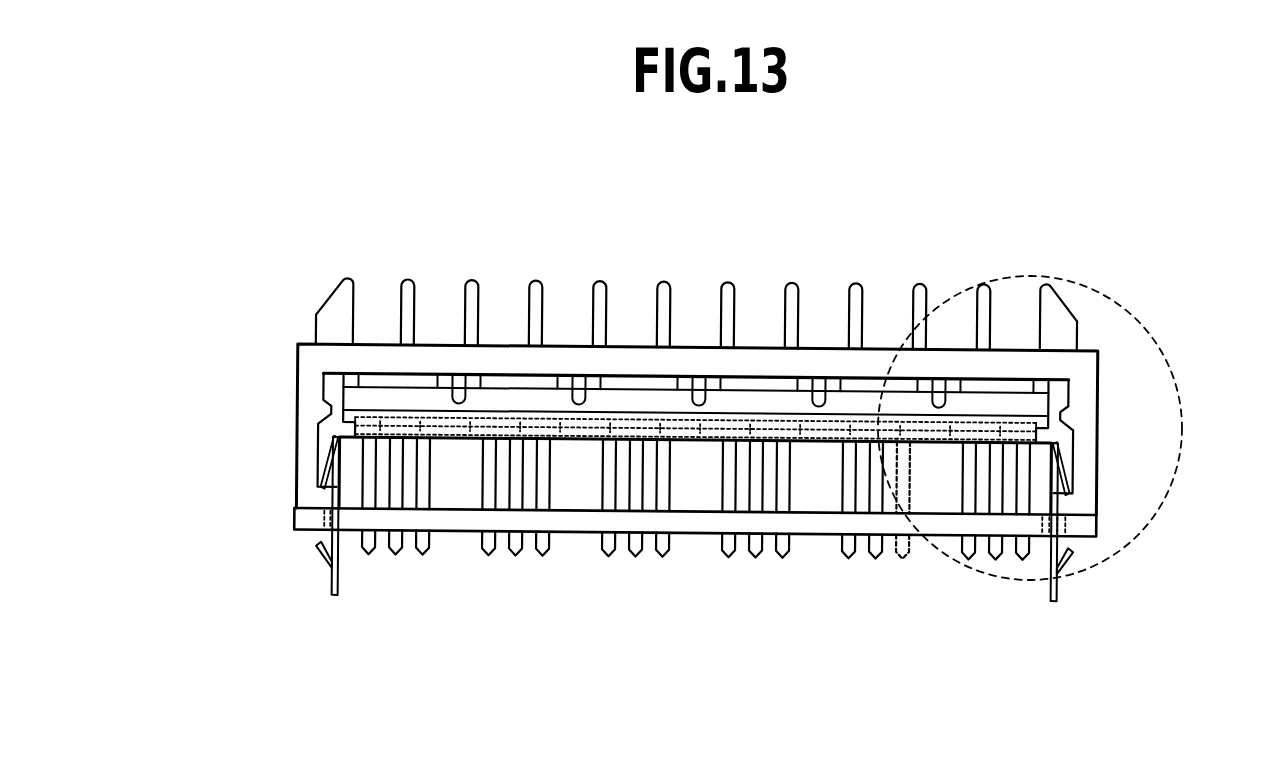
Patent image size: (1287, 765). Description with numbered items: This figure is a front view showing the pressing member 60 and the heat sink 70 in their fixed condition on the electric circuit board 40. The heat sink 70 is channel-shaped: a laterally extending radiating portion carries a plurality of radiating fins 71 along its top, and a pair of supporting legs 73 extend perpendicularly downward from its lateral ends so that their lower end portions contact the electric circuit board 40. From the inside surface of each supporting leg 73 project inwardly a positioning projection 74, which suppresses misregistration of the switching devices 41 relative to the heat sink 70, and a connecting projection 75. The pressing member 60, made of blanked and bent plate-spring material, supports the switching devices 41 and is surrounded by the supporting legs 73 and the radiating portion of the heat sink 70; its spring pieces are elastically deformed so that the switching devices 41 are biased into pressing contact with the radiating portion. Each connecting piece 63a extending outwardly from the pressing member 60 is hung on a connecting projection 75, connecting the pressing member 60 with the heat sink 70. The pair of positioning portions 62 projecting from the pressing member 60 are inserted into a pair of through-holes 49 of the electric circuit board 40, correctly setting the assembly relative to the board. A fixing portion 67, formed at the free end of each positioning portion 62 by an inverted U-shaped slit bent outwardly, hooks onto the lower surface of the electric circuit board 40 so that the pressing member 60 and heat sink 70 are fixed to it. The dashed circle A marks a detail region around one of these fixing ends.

The heat sink 70 is at (300, 337).
The radiating fins 71 is at (478, 282).
The switching devices 41 is at (636, 402).
The pressing member 60 is at (870, 408).
The positioning projection 74 is at (1068, 418).
The connecting piece 63a is at (317, 468).
The supporting legs 73 is at (302, 452).
The connecting projection 75 is at (315, 500).
The positioning portions 62 is at (340, 550).
The fixing portion 67 is at (320, 577).
The through-holes 49 is at (348, 518).
The electric circuit board 40 is at (702, 533).
The detail region A is at (1150, 522).